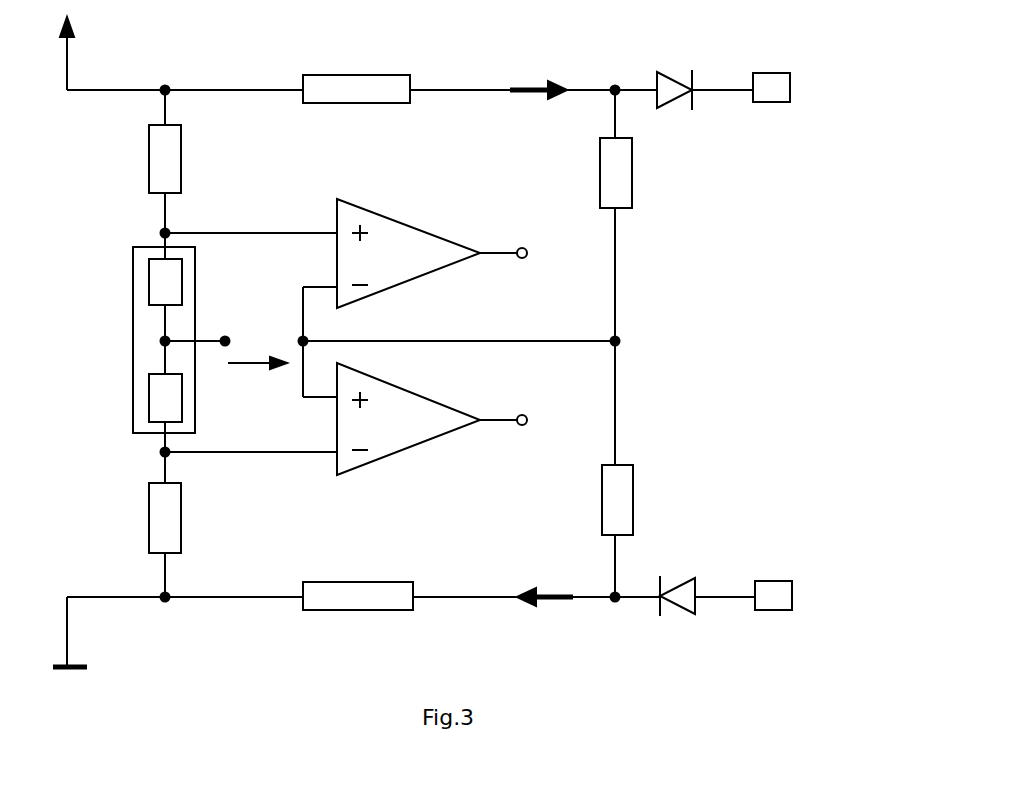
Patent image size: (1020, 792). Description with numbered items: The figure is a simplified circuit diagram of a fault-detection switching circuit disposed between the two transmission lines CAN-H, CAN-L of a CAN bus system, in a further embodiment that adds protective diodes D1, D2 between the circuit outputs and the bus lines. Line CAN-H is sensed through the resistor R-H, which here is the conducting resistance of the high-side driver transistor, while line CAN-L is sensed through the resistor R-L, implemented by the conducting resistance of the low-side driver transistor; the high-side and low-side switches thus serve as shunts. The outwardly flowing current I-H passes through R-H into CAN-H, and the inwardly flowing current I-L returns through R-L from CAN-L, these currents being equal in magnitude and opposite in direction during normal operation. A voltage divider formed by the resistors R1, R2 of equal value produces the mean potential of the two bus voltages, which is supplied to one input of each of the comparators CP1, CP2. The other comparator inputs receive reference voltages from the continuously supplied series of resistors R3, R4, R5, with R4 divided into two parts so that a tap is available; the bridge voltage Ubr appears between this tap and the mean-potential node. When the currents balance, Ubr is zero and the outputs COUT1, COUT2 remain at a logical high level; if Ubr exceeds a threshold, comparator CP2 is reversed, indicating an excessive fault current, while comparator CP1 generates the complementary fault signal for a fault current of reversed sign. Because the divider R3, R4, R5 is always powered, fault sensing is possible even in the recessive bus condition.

The resistor R1 is at (635, 173).
The resistor R2 is at (638, 500).
The resistor R3 is at (140, 159).
The resistor R4 is at (161, 340).
The resistor R5 is at (140, 518).
The resistor R-H is at (343, 72).
The resistor R-L is at (344, 613).
The current through R-H I-H is at (533, 70).
The current through R-L I-L is at (545, 614).
The bridge voltage Ubr is at (257, 377).
The diode D1 is at (705, 76).
The diode D2 is at (707, 613).
The transmission line CAN-H is at (812, 87).
The transmission line CAN-L is at (813, 595).
The comparator CP1 is at (408, 251).
The comparator CP2 is at (408, 420).
The output COUT1 is at (544, 254).
The output COUT2 is at (544, 420).